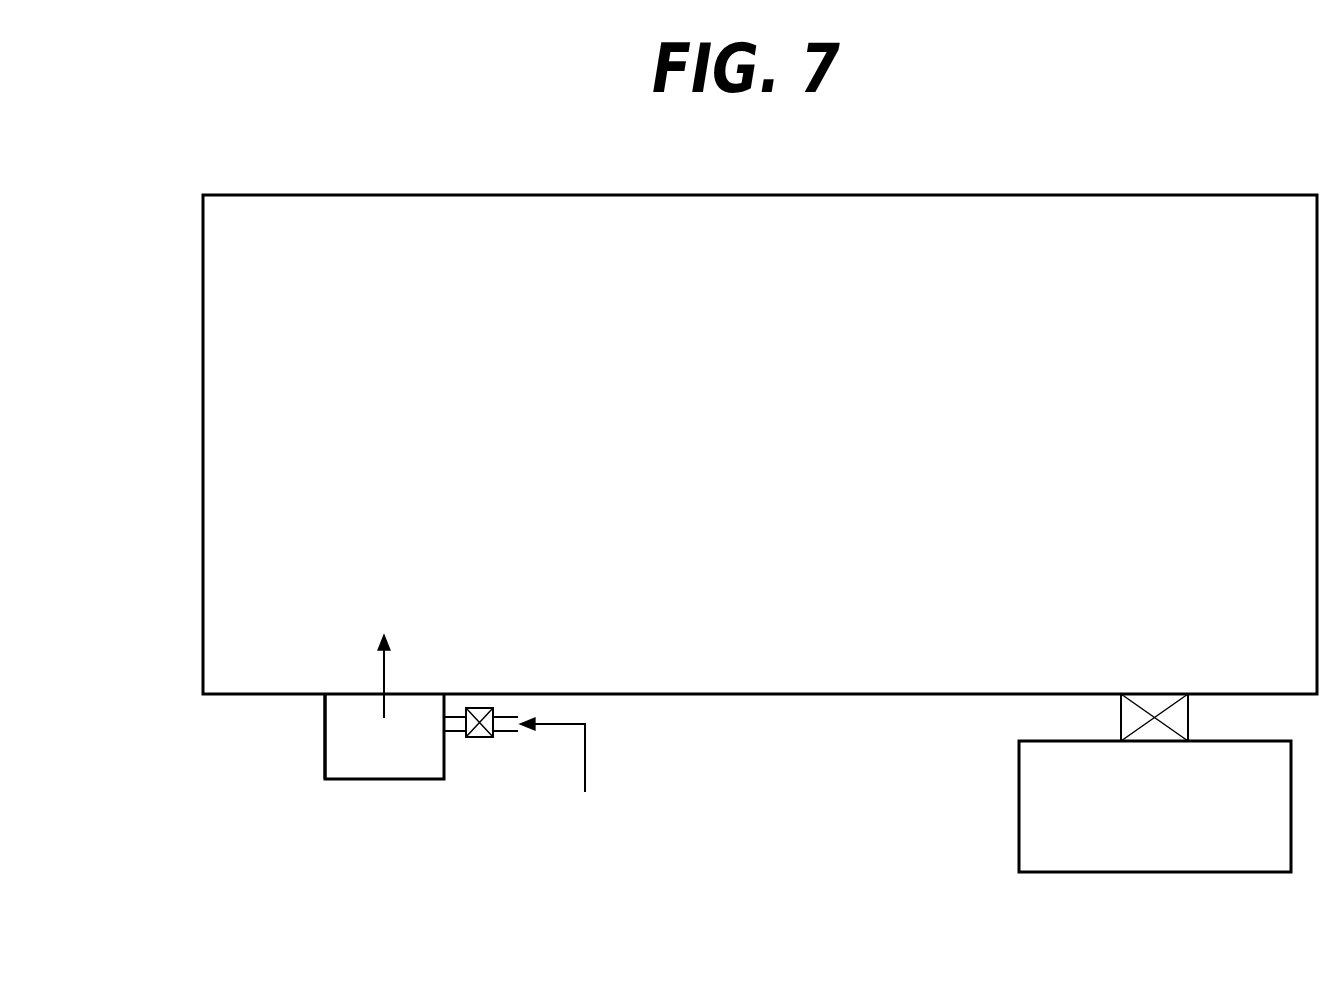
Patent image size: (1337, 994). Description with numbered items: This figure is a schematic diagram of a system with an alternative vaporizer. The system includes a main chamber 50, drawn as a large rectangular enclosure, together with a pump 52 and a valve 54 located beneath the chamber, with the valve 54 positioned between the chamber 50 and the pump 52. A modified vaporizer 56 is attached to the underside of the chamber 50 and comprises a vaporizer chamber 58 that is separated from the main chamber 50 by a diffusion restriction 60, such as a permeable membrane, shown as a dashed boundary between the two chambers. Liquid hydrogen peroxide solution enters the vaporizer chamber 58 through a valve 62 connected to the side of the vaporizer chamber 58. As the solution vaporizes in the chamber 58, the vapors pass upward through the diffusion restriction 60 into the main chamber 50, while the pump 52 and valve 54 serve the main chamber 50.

The chamber 50 is at (921, 194).
The pump 52 is at (1011, 807).
The valve 54 is at (1090, 712).
The vaporizer 56 is at (360, 797).
The chamber 58 is at (325, 741).
The diffusion restriction 60 is at (416, 692).
The valve 62 is at (483, 738).